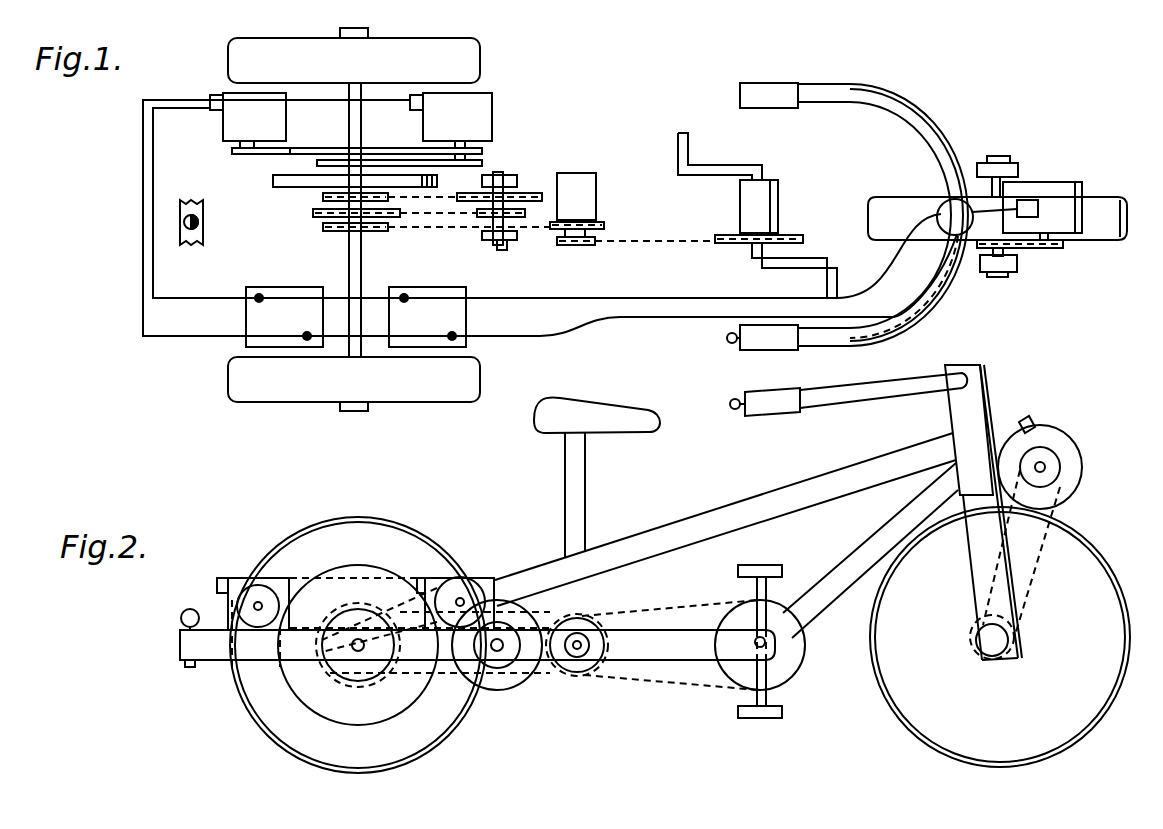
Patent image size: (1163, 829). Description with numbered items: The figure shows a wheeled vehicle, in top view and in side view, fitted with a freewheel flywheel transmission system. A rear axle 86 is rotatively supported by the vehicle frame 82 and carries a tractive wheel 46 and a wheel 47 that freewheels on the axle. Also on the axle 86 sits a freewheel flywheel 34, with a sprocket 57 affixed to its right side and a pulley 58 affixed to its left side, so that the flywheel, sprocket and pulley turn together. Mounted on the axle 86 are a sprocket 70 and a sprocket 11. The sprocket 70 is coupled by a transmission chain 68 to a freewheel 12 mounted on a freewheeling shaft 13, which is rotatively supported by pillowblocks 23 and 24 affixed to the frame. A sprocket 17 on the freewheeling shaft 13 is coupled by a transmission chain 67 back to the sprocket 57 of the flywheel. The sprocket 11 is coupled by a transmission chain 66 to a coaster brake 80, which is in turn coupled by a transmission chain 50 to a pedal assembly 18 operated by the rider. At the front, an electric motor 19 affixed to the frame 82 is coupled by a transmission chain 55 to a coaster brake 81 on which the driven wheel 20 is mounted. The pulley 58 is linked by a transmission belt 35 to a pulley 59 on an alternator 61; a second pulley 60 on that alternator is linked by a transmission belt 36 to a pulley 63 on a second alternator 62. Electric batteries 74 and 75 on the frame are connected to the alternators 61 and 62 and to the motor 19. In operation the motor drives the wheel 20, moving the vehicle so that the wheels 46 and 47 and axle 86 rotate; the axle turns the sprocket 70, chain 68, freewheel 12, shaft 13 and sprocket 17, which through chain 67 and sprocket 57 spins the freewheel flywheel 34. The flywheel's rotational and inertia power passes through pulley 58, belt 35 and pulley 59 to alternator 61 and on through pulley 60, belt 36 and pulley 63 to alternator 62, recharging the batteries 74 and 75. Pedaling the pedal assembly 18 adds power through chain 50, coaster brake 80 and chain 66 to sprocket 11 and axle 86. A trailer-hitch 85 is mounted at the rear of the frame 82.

In FIG. 1, the sprocket 11 is at (324, 230).
In FIG. 2, the sprocket 11 is at (352, 686).
In FIG. 1, the freewheel 12 is at (596, 188).
In FIG. 2, the freewheel 12 is at (516, 682).
In FIG. 1, the freewheeling shaft 13 is at (508, 250).
In FIG. 1, the sprocket 17 is at (526, 212).
In FIG. 2, the sprocket 17 is at (499, 670).
In FIG. 1, the pedal assembly 18 is at (740, 200).
In FIG. 2, the pedal assembly 18 is at (792, 670).
In FIG. 1, the electric motor 19 is at (1055, 185).
In FIG. 2, the electric motor 19 is at (1060, 442).
In FIG. 1, the driven wheel 20 is at (1105, 198).
In FIG. 2, the driven wheel 20 is at (1090, 556).
In FIG. 1, the pillowblock 23 is at (520, 198).
In FIG. 1, the pillowblock 24 is at (497, 244).
In FIG. 1, the freewheel flywheel 34 is at (278, 183).
In FIG. 2, the freewheel flywheel 34 is at (368, 565).
In FIG. 1, the transmission belt 35 is at (436, 178).
In FIG. 1, the transmission belt 36 is at (300, 148).
In FIG. 2, the transmission belt 36 is at (300, 580).
In FIG. 1, the tractive wheel 46 is at (228, 375).
In FIG. 1, the wheel 47 is at (482, 64).
In FIG. 2, the wheel 47 is at (358, 517).
In FIG. 1, the transmission chain 50 is at (622, 242).
In FIG. 2, the transmission chain 50 is at (678, 609).
In FIG. 1, the transmission chain 55 is at (1046, 249).
In FIG. 1, the sprocket 57 is at (323, 198).
In FIG. 1, the pulley 58 is at (316, 163).
In FIG. 1, the pulley 59 is at (506, 192).
In FIG. 2, the pulley 59 is at (482, 580).
In FIG. 1, the pulley 60 is at (480, 162).
In FIG. 2, the pulley 60 is at (460, 577).
In FIG. 1, the alternator 61 is at (462, 133).
In FIG. 2, the alternator 61 is at (478, 578).
In FIG. 1, the alternator 62 is at (266, 133).
In FIG. 2, the alternator 62 is at (238, 578).
In FIG. 1, the pulley 63 is at (236, 154).
In FIG. 2, the pulley 63 is at (262, 596).
In FIG. 1, the transmission chain 66 is at (426, 228).
In FIG. 2, the transmission chain 66 is at (570, 673).
In FIG. 1, the transmission chain 67 is at (455, 198).
In FIG. 2, the transmission chain 67 is at (446, 690).
In FIG. 1, the transmission chain 68 is at (440, 222).
In FIG. 2, the transmission chain 68 is at (492, 680).
In FIG. 1, the sprocket 70 is at (313, 215).
In FIG. 2, the sprocket 70 is at (322, 658).
In FIG. 1, the electric battery 74 is at (412, 288).
In FIG. 1, the electric battery 75 is at (262, 288).
In FIG. 1, the coaster brake 80 is at (602, 222).
In FIG. 2, the coaster brake 80 is at (590, 620).
In FIG. 1, the coaster brake 81 is at (1022, 250).
In FIG. 2, the coaster brake 81 is at (970, 630).
In FIG. 1, the vehicle frame 82 is at (988, 277).
In FIG. 2, the vehicle frame 82 is at (688, 522).
In FIG. 1, the trailer-hitch 85 is at (182, 213).
In FIG. 2, the trailer-hitch 85 is at (190, 609).
In FIG. 1, the axle 86 is at (356, 92).
In FIG. 2, the axle 86 is at (360, 652).